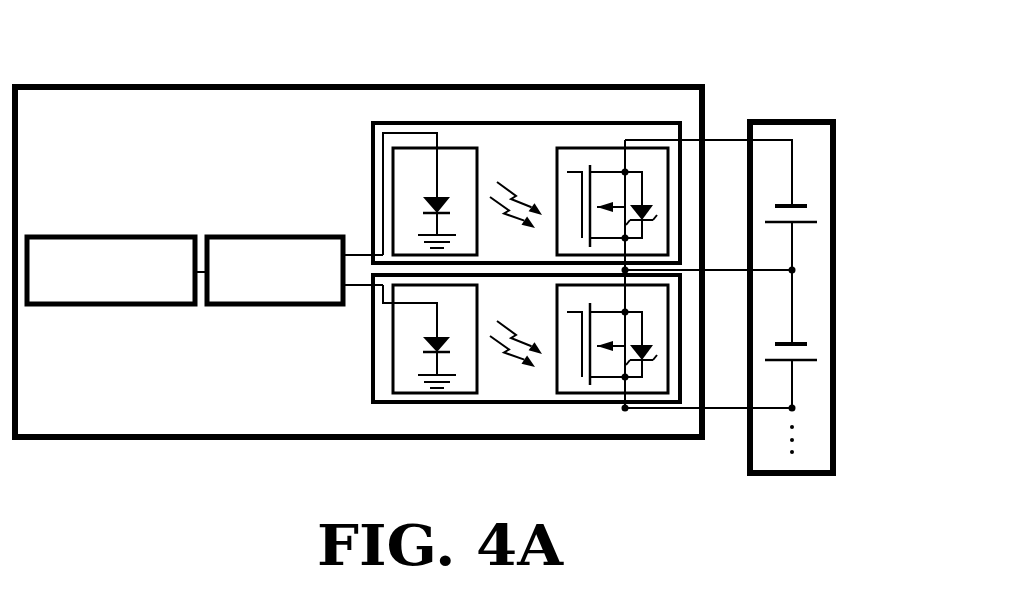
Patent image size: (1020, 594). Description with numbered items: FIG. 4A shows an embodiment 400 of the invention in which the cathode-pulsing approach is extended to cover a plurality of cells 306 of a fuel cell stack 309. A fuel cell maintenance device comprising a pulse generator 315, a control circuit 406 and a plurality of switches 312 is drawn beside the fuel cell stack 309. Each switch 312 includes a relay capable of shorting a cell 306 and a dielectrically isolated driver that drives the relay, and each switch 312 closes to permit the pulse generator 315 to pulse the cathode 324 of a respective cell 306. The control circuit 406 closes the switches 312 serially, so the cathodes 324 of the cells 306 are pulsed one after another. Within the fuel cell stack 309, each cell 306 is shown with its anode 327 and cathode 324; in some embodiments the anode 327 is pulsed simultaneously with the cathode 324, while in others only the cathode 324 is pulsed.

The embodiment 400 is at (137, 24).
The pulse generator 315 is at (112, 237).
The control circuit 406 is at (272, 237).
The switch 312 is at (373, 193).
The fuel cell stack 309 is at (832, 122).
The anode 327 is at (798, 205).
The cell 306 is at (812, 210).
The cathode 324 is at (812, 222).